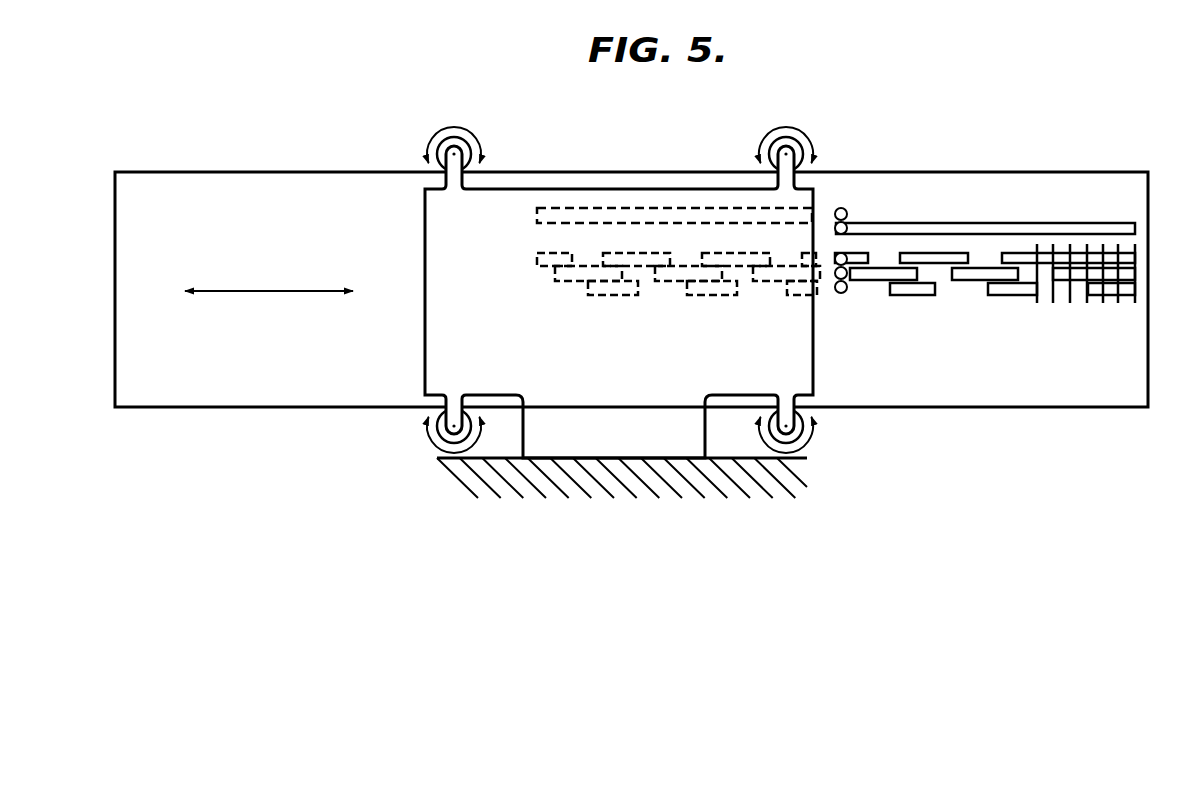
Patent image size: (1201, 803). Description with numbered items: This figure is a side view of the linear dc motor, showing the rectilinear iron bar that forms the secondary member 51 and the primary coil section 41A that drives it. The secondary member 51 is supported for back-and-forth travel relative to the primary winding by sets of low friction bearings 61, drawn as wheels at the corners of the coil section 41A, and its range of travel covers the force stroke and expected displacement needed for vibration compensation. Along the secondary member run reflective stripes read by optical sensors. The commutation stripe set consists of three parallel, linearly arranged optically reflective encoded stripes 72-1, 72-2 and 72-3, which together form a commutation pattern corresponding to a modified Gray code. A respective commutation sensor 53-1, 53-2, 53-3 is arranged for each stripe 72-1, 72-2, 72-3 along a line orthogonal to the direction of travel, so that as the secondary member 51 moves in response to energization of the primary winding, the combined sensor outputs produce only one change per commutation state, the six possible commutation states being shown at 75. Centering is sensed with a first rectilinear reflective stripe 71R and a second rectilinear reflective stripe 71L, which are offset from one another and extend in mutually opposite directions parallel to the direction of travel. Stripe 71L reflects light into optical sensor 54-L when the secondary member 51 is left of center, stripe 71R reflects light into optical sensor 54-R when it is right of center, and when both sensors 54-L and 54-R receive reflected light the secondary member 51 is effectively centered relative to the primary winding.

The secondary member 51 is at (271, 192).
The low friction bearings 61 is at (461, 133).
The coil section 41A is at (433, 315).
The first rectilinear reflective stripe 71R is at (613, 208).
The second rectilinear reflective stripe 71L is at (1007, 222).
The commutation stripe 72-1 is at (537, 257).
The commutation stripe 72-2 is at (555, 277).
The commutation stripe 72-3 is at (588, 287).
The commutation states 75 is at (985, 303).
The optical sensor 54-R is at (848, 206).
The optical sensor 54-L is at (856, 220).
The commutation sensor 53-1 is at (853, 270).
The commutation sensor 53-2 is at (854, 287).
The commutation sensor 53-3 is at (843, 303).